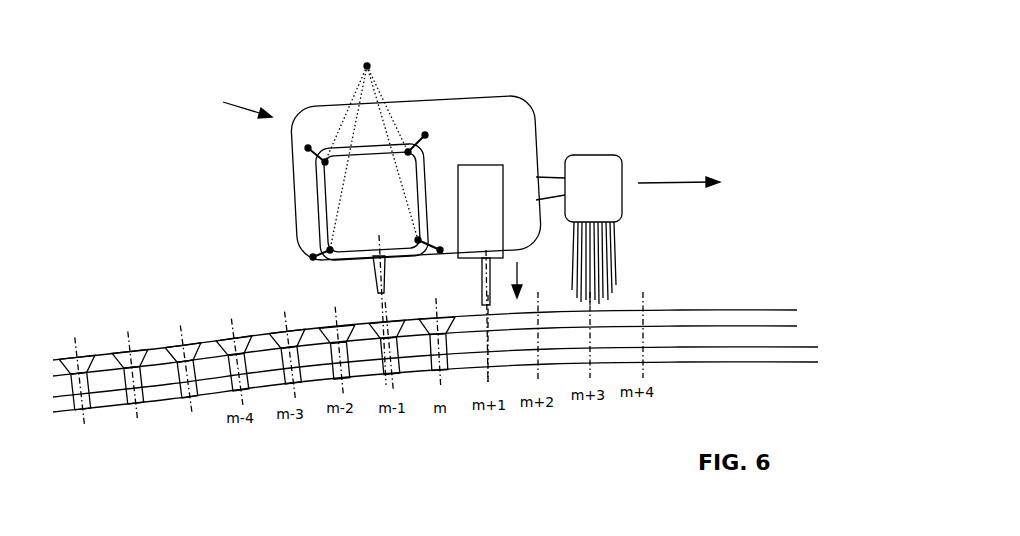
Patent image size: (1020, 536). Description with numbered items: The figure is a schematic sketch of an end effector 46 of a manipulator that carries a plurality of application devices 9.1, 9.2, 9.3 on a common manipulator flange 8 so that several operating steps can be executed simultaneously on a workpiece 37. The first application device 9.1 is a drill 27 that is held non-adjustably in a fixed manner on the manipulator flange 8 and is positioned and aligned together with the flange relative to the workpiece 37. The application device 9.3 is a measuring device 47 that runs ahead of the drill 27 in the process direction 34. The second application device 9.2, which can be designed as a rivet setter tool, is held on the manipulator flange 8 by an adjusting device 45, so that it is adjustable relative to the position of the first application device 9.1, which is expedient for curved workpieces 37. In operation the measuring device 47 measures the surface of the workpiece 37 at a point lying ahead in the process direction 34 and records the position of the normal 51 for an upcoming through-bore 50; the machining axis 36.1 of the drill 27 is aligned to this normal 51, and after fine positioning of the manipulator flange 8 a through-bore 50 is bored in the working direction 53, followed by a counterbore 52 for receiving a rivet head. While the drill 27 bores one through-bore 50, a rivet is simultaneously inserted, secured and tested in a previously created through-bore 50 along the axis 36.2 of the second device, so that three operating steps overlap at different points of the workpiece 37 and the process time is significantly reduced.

The manipulator flange 8 is at (518, 120).
The first application device 9.1 is at (480, 211).
The second application device 9.2 is at (374, 196).
The application device 9.3 is at (593, 230).
The drill 27 is at (487, 146).
The process direction 34 is at (677, 178).
The machining axis 36.1 is at (488, 306).
The second probe 36.2 is at (379, 294).
The workpiece 37 is at (710, 332).
The adjusting device 45 is at (371, 146).
The end effector 46 is at (236, 107).
The measuring device 47 is at (608, 203).
The through-bore 50 is at (438, 334).
The normal 51 is at (591, 325).
The counterbore 52 is at (135, 350).
The working direction 53 is at (519, 271).